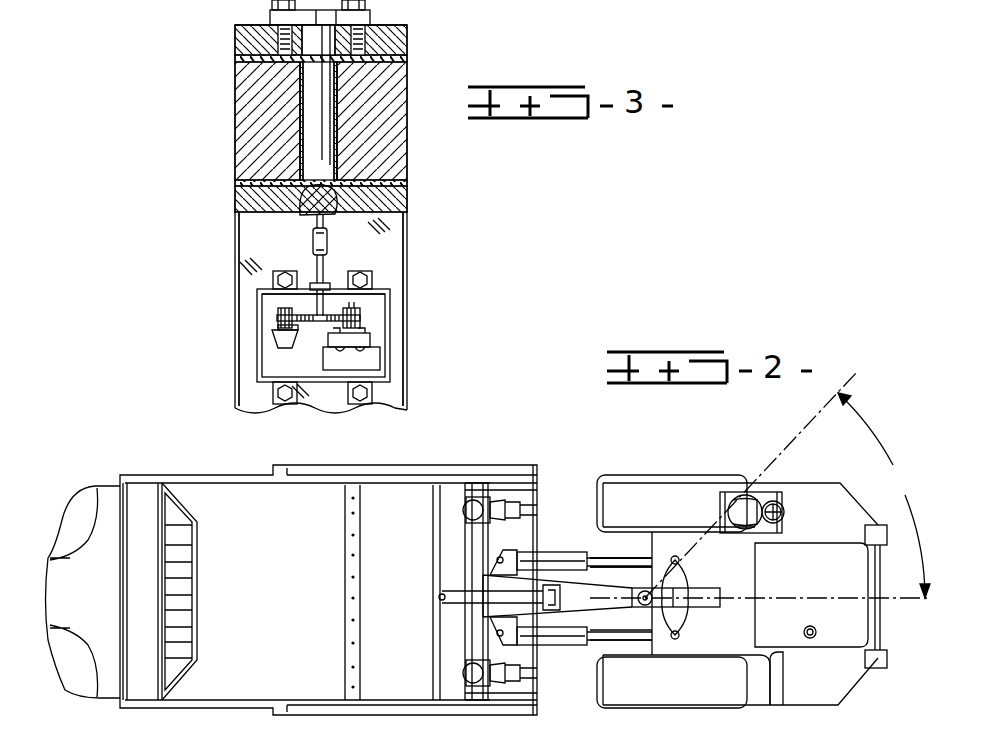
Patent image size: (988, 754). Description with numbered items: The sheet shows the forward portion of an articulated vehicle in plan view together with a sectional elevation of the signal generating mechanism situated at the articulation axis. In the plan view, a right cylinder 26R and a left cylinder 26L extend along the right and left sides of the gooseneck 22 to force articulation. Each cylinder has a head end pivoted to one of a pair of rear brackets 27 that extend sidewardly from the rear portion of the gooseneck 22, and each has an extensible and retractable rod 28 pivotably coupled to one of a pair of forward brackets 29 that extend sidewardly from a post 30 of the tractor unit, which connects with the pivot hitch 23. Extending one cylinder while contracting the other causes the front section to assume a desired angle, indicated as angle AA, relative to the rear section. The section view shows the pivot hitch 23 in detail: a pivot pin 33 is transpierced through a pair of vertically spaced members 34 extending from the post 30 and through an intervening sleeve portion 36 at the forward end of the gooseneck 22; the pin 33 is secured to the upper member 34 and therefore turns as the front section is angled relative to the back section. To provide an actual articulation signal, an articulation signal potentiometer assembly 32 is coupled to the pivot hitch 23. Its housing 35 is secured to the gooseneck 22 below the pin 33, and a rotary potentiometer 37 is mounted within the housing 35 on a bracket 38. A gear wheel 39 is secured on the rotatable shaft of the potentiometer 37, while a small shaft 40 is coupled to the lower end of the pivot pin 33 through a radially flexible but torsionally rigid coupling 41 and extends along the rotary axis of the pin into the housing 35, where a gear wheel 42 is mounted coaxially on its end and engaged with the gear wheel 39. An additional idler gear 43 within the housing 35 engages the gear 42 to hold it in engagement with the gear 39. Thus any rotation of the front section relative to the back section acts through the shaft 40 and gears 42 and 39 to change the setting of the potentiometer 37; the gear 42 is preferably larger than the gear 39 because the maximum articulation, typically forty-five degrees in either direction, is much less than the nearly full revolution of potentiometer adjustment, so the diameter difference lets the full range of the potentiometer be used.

In FIG. 3, the gooseneck 22 is at (407, 262).
In FIG. 3, the pivot hitch 23 is at (407, 46).
In FIG. 2, the pivot hitch 23 is at (640, 612).
In FIG. 2, the left cylinder 26L is at (584, 526).
In FIG. 2, the right cylinder 26R is at (578, 641).
In FIG. 2, the rear brackets 27 is at (497, 566).
In FIG. 2, the rod 28 is at (612, 558).
In FIG. 2, the forward brackets 29 is at (680, 616).
In FIG. 2, the post 30 is at (695, 590).
In FIG. 3, the articulation signal potentiometer assembly 32 is at (390, 335).
In FIG. 3, the pivot pin 33 is at (310, 97).
In FIG. 3, the vertically spaced members 34 is at (240, 40).
In FIG. 3, the articulation signal potentiometer housing 35 is at (258, 305).
In FIG. 3, the sleeve portion 36 is at (398, 150).
In FIG. 3, the potentiometer 37 is at (363, 340).
In FIG. 3, the bracket 38 is at (375, 365).
In FIG. 3, the gear wheel 39 is at (360, 318).
In FIG. 3, the small shaft 40 is at (325, 272).
In FIG. 3, the coupling 41 is at (313, 242).
In FIG. 3, the gear wheel 42 is at (317, 325).
In FIG. 3, the idler gear 43 is at (277, 318).
In FIG. 2, the articulation angle AA is at (884, 495).